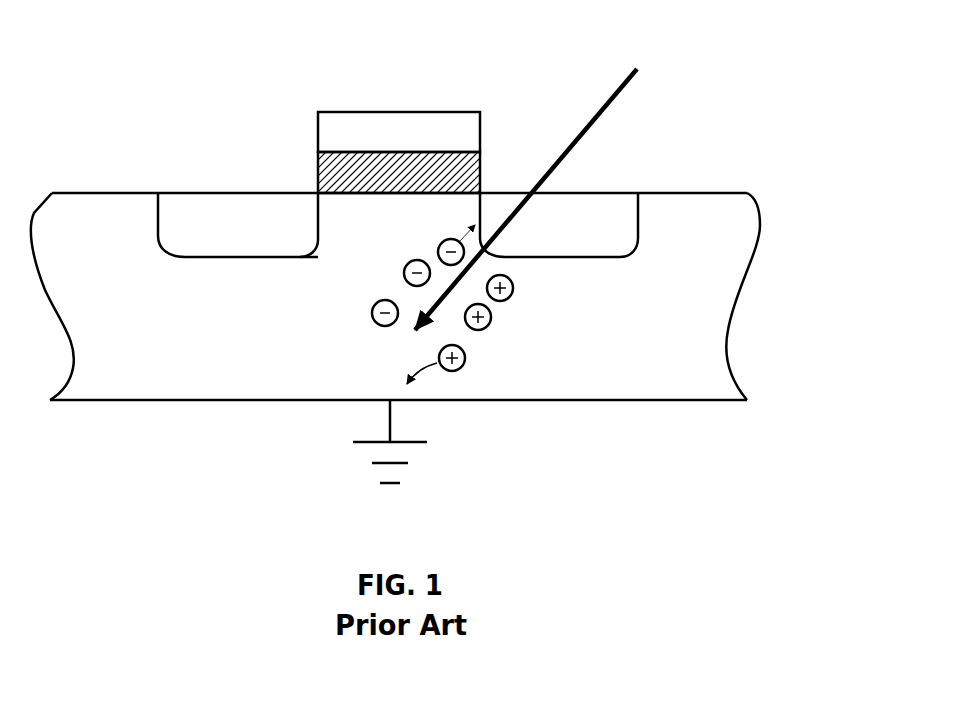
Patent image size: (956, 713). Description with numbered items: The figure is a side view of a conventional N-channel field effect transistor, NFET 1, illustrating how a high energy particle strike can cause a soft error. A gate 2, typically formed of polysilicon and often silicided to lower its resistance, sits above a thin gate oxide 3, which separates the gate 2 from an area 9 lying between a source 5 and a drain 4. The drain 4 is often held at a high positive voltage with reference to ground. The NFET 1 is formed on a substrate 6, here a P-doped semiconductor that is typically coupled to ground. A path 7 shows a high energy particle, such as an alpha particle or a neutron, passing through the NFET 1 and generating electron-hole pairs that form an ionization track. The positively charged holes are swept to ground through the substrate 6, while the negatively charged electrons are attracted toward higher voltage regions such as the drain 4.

The NFET 1 is at (283, 88).
The gate 2 is at (481, 126).
The gate oxide 3 is at (481, 170).
The drain 4 is at (598, 193).
The source 5 is at (266, 193).
The substrate 6 is at (558, 357).
The path 7 is at (592, 110).
The area 9 is at (370, 227).